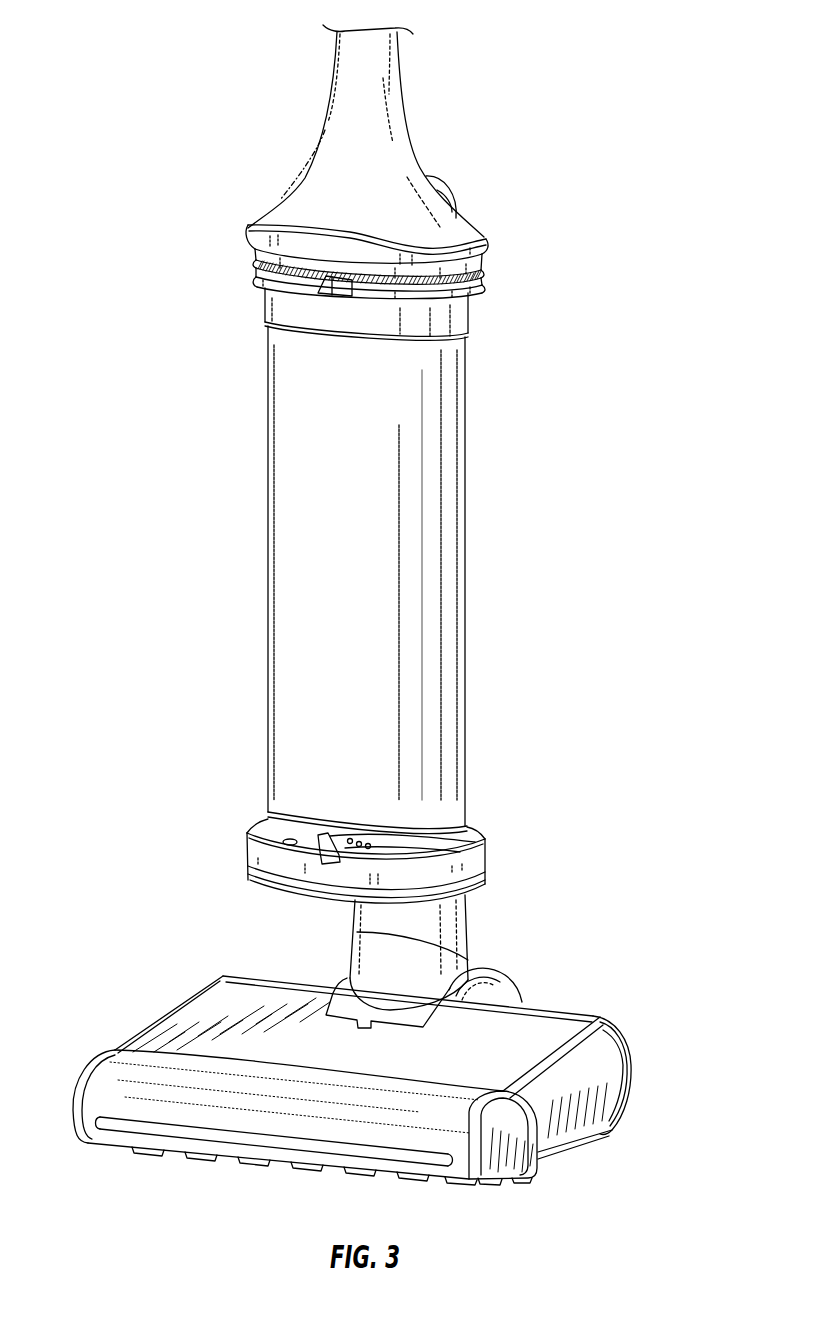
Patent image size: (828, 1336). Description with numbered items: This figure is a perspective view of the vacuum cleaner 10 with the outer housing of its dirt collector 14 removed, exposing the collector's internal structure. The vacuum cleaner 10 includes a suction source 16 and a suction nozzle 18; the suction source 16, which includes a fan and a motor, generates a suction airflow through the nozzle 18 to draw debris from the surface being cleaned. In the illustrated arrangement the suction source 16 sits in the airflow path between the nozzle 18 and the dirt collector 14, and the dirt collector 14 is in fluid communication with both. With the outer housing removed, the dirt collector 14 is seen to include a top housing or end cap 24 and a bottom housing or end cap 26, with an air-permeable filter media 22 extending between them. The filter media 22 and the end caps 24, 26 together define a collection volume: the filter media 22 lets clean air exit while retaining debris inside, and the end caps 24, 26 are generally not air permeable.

The vacuum cleaner 10 is at (608, 99).
The dirt collector 14 is at (540, 530).
The suction source 16 is at (463, 993).
The suction nozzle 18 is at (273, 1163).
The filter media 22 is at (283, 410).
The top housing or end cap 24 is at (253, 278).
The bottom housing or end cap 26 is at (462, 830).